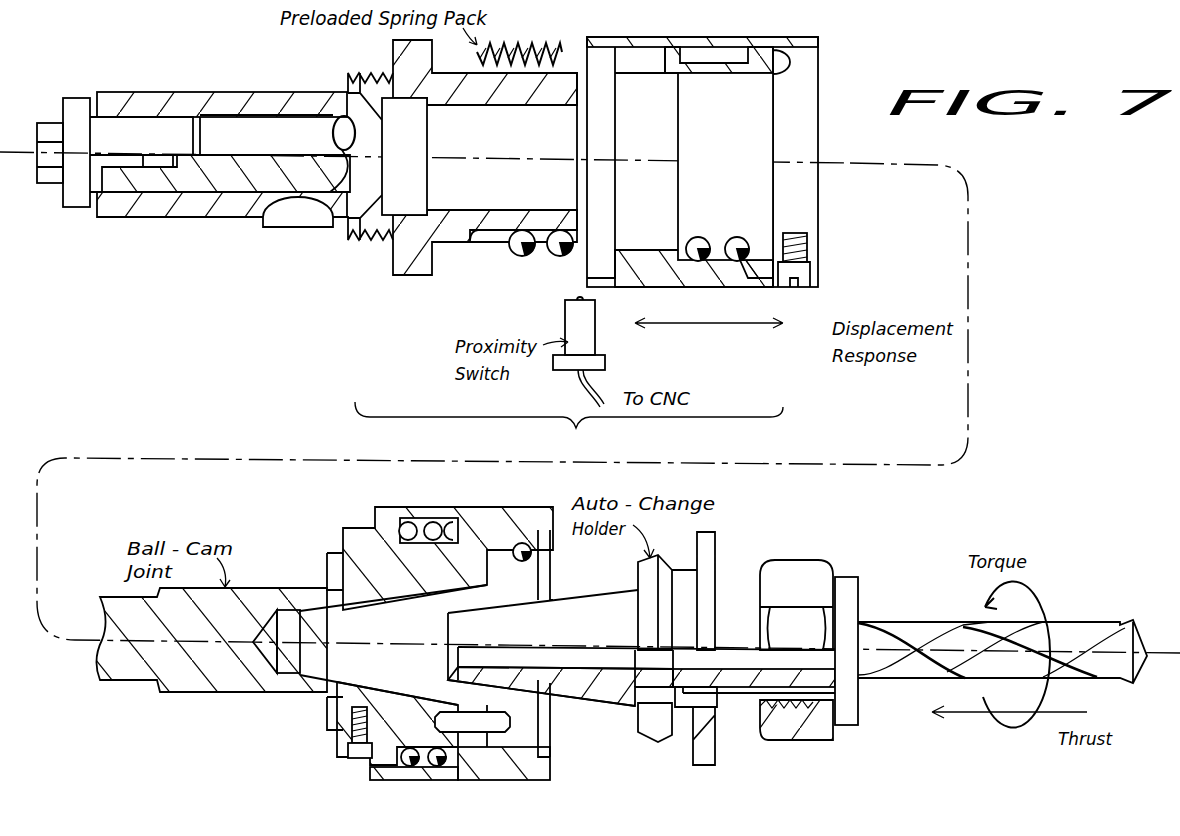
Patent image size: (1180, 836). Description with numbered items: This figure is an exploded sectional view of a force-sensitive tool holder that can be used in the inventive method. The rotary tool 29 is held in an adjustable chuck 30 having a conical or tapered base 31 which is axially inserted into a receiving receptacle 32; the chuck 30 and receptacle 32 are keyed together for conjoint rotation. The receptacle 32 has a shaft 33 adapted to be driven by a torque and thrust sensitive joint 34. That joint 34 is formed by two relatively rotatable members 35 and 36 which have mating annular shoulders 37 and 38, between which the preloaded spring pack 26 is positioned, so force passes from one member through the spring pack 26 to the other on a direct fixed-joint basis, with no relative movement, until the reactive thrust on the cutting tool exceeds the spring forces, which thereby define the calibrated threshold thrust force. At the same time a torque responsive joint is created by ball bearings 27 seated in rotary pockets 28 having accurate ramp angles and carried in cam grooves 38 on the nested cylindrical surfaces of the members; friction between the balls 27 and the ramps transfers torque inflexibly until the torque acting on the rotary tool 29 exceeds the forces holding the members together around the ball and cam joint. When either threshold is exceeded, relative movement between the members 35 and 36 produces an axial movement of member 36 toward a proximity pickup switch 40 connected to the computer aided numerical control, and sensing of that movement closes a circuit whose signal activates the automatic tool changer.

The preloaded spring pack 26 is at (517, 47).
The ball bearings 27 is at (727, 238).
The rotary pockets 28 is at (495, 237).
The rotary tool 29 is at (892, 625).
The adjustable chuck 30 is at (740, 677).
The tapered base 31 is at (583, 685).
The receiving receptacle 32 is at (375, 587).
The shaft 33 is at (138, 605).
The torque and thrust sensitive joint 34 is at (569, 429).
The first rotatable member 35 is at (473, 92).
The second rotatable member 36 is at (718, 52).
The annular shoulder 37 is at (442, 263).
The annular shoulder 38 is at (658, 53).
The proximity pickup switch 40 is at (587, 337).